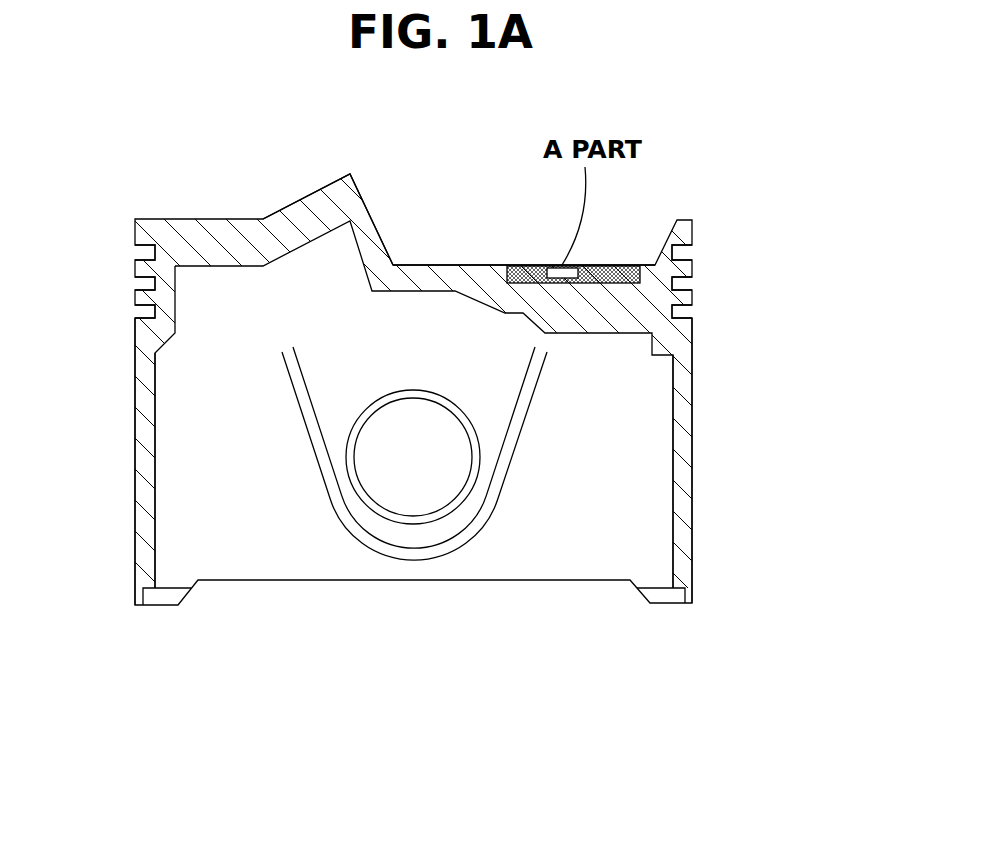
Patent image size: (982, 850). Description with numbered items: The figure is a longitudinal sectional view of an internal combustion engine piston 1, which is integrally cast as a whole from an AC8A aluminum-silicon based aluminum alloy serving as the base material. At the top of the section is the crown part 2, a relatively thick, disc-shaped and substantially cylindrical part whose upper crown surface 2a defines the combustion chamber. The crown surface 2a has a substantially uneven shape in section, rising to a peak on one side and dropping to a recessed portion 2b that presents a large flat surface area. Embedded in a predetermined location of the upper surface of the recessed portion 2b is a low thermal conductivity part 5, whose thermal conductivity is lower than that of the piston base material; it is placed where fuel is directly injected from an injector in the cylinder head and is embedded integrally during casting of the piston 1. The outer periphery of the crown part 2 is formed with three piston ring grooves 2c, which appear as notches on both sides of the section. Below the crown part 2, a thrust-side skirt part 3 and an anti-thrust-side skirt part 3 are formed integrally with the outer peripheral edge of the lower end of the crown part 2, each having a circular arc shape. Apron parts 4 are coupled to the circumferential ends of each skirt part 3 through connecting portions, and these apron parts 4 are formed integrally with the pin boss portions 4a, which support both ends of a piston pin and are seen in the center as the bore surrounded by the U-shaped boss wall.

The piston 1 is at (697, 406).
The crown part 2 is at (660, 301).
The crown surface 2a is at (306, 190).
The recessed portion 2b is at (462, 263).
The piston ring grooves 2c is at (140, 309).
The skirt part 3 is at (137, 403).
The apron part 4 is at (510, 565).
The pin boss portion 4a is at (407, 537).
The low thermal conductivity part 5 is at (603, 267).